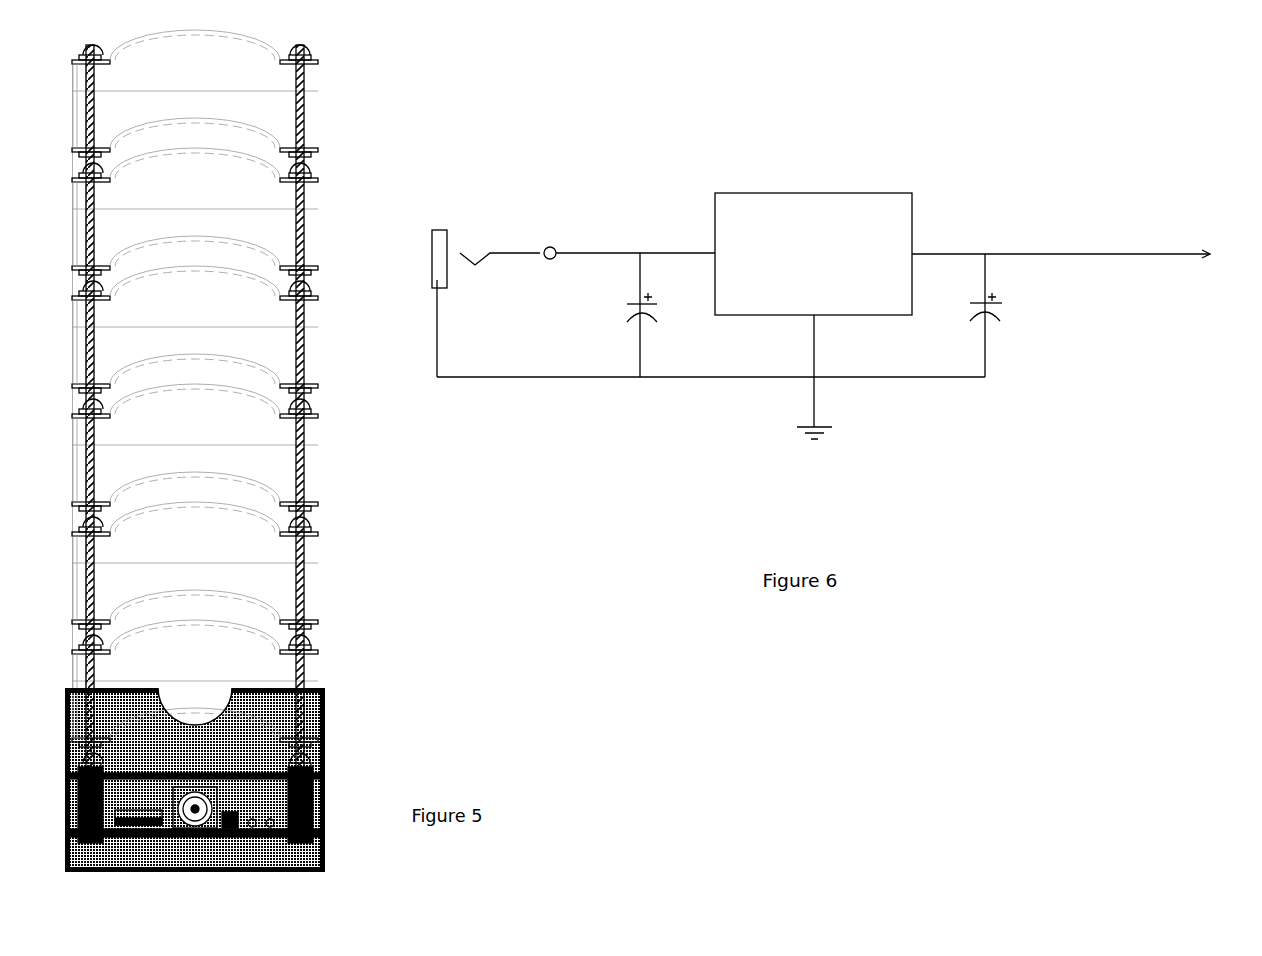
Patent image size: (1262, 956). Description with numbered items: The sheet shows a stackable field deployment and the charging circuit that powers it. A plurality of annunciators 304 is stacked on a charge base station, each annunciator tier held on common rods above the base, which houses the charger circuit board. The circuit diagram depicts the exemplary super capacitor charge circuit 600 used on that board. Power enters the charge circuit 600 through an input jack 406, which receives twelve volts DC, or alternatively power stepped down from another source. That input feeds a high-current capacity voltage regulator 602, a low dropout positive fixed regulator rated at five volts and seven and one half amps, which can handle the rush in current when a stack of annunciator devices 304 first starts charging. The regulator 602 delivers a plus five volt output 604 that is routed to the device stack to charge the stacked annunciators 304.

In FIG. 5, the annunciators 304 is at (234, 450).
In FIG. 5, the input jack 406 is at (325, 777).
In FIG. 6, the input jack 406 is at (452, 218).
In FIG. 6, the charge circuit 600 is at (830, 310).
In FIG. 6, the voltage regulator 602 is at (770, 193).
In FIG. 6, the +5V output 604 is at (1190, 355).